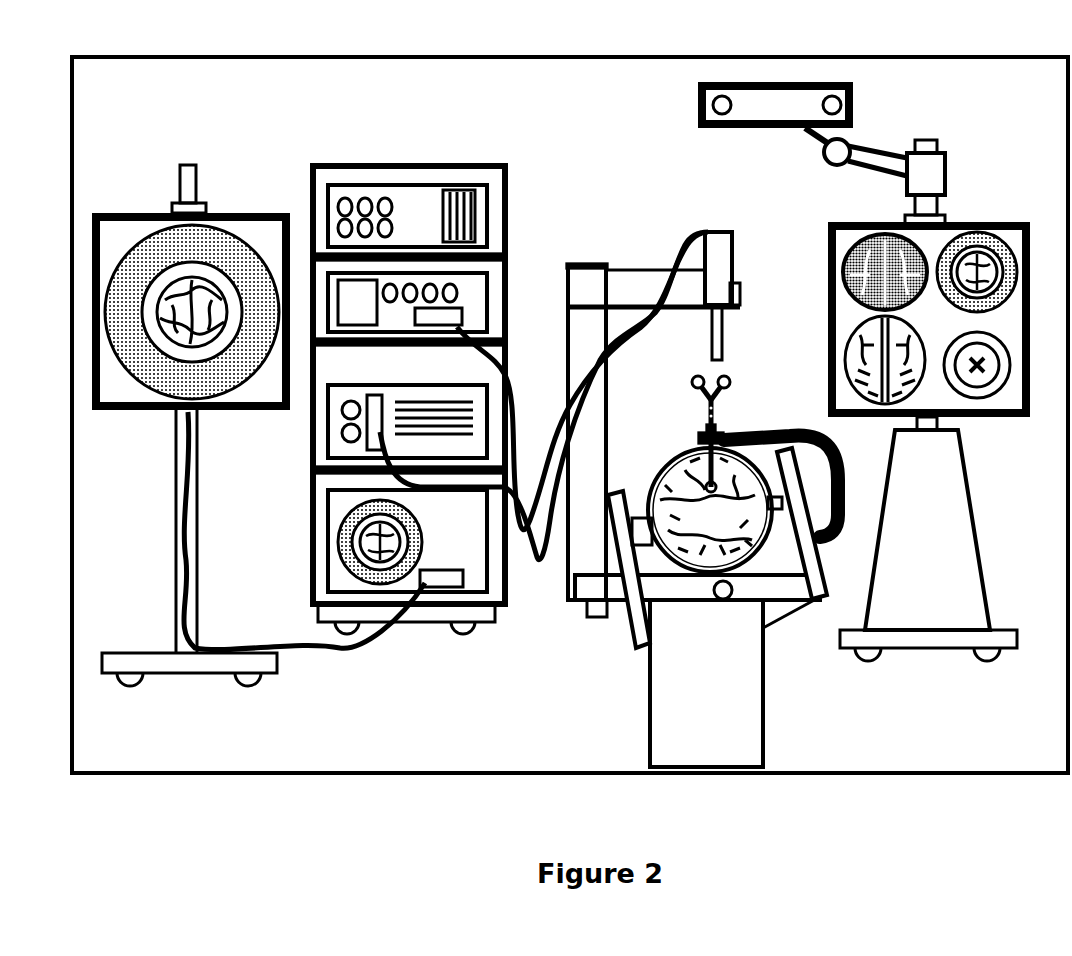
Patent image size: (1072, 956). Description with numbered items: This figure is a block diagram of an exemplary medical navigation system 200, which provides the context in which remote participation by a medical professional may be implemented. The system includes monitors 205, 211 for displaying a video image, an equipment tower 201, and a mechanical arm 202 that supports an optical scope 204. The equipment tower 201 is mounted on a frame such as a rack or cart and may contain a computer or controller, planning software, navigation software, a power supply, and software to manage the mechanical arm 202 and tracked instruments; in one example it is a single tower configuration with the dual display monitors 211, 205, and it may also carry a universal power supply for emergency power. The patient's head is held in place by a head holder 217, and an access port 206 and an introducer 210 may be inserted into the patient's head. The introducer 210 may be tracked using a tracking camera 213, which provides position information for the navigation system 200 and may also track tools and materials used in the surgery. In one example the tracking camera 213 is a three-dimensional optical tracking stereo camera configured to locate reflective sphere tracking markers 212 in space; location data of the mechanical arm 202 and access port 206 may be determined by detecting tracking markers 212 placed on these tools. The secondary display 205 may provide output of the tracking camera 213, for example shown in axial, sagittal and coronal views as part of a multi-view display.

The medical navigation system 200 is at (158, 65).
The equipment tower 201 is at (423, 170).
The mechanical arm 202 is at (603, 303).
The optical scope 204 is at (725, 327).
The secondary display 205 is at (783, 240).
The access port 206 is at (690, 454).
The introducer 210 is at (725, 410).
The monitor 211 is at (228, 213).
The tracking markers 212 is at (733, 380).
The tracking camera 213 is at (713, 130).
The head holder 217 is at (642, 643).